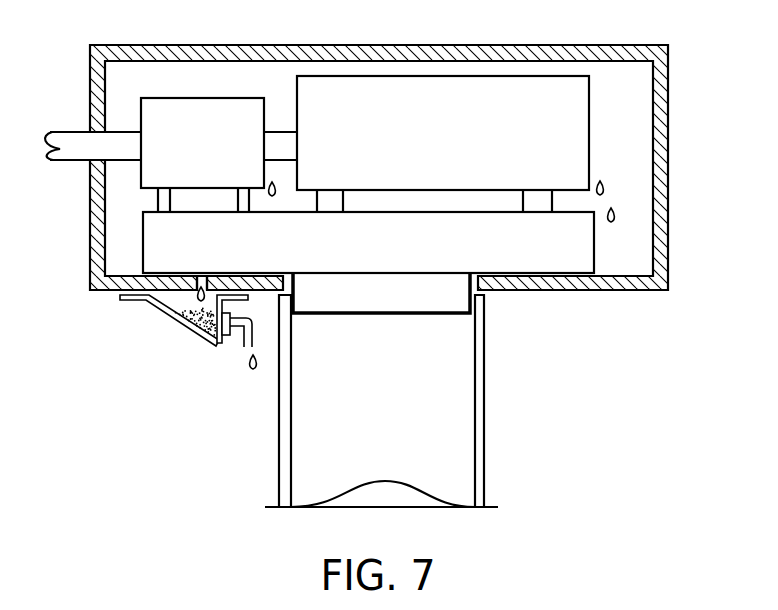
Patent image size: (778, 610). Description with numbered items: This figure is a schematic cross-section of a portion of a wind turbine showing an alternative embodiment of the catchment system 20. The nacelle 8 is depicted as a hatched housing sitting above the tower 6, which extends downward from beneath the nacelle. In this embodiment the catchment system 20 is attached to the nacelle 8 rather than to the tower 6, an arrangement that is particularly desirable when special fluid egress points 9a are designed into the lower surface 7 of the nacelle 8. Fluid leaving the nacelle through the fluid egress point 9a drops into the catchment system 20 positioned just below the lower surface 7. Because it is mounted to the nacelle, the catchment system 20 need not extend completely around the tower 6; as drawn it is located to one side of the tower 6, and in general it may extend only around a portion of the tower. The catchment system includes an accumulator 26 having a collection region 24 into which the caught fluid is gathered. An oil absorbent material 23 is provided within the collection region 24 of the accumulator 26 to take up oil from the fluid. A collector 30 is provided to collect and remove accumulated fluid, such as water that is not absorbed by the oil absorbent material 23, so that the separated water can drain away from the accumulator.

The tower 6 is at (485, 428).
The lower surface 7 is at (622, 290).
The nacelle 8 is at (596, 45).
The fluid egress point 9a is at (203, 287).
The catchment system 20 is at (173, 349).
The oil absorbent material 23 is at (163, 304).
The collection region 24 is at (212, 336).
The accumulator 26 is at (200, 329).
The collector 30 is at (246, 336).